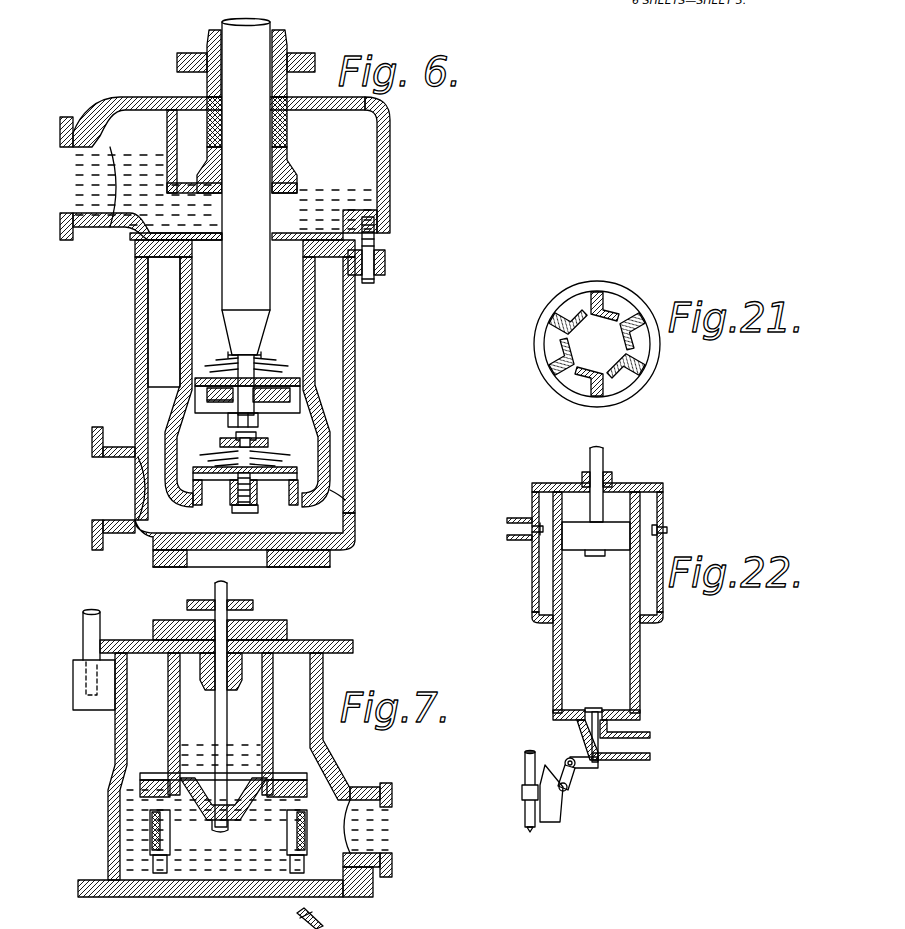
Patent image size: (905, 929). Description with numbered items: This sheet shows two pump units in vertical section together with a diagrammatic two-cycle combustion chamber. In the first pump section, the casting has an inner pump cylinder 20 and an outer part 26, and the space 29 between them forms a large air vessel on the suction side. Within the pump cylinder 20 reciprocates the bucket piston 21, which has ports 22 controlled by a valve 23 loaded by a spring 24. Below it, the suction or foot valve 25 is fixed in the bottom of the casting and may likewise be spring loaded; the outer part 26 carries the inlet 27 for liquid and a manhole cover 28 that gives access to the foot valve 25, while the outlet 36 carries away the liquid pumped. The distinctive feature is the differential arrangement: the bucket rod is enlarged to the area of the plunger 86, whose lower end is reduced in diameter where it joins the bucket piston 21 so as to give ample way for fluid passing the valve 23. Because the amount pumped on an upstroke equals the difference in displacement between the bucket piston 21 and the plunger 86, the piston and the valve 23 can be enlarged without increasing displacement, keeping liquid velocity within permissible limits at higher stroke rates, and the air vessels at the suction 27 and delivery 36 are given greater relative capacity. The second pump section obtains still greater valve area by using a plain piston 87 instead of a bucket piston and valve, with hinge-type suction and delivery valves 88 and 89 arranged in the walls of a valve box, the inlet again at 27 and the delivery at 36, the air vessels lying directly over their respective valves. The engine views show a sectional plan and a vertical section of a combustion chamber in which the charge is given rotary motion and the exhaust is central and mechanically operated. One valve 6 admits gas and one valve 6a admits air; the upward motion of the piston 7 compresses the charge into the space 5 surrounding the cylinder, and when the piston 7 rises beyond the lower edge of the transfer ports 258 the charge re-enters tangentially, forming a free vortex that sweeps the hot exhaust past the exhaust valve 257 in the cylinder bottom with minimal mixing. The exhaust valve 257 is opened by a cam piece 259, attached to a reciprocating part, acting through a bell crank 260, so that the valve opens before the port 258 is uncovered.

In FIG. 6, the outlet 36 is at (72, 183).
In FIG. 7, the outlet 36 is at (375, 833).
In FIG. 6, the plunger 86 is at (246, 189).
In FIG. 6, the space 29 is at (164, 322).
In FIG. 6, the pump cylinder 20 is at (182, 318).
In FIG. 6, the outer part of the casting 26 is at (137, 343).
In FIG. 6, the spring 24 is at (267, 362).
In FIG. 6, the valve 23 is at (300, 381).
In FIG. 6, the bucket piston 21 is at (325, 405).
In FIG. 6, the ports 22 is at (220, 401).
In FIG. 6, the inlet 27 is at (100, 493).
In FIG. 7, the inlet 27 is at (330, 926).
In FIG. 6, the suction or foot valve 25 is at (297, 470).
In FIG. 6, the manhole cover 28 is at (268, 552).
In FIG. 7, the suction valve 88 is at (162, 833).
In FIG. 7, the plain piston 87 is at (280, 833).
In FIG. 7, the delivery valve 89 is at (298, 833).
In FIG. 22, the valve for gas 6 is at (528, 520).
In FIG. 22, the valve for air 6a is at (652, 537).
In FIG. 22, the transfer ports 258 is at (555, 547).
In FIG. 22, the piston 7 is at (596, 502).
In FIG. 22, the space 5 is at (643, 588).
In FIG. 22, the exhaust valve 257 is at (601, 721).
In FIG. 22, the bell crank 260 is at (585, 766).
In FIG. 22, the cam piece 259 is at (553, 807).